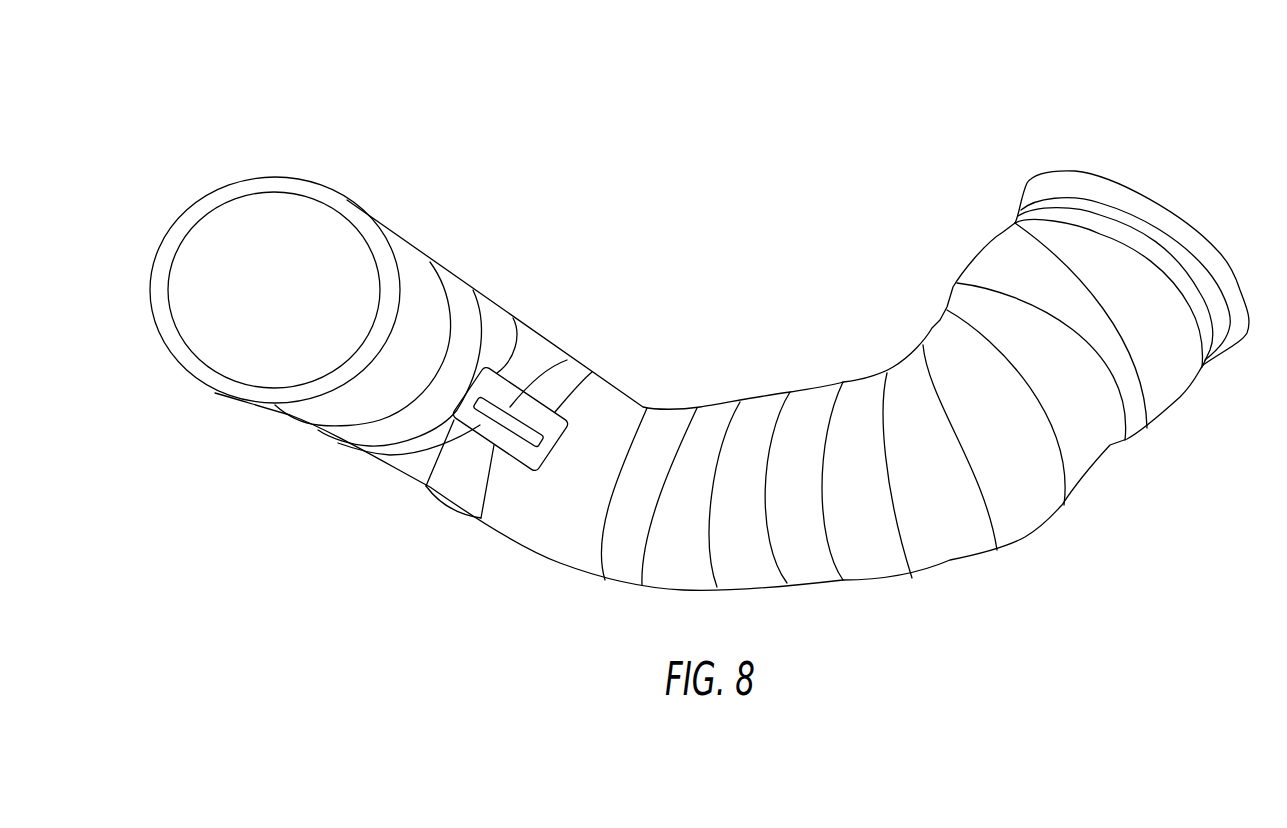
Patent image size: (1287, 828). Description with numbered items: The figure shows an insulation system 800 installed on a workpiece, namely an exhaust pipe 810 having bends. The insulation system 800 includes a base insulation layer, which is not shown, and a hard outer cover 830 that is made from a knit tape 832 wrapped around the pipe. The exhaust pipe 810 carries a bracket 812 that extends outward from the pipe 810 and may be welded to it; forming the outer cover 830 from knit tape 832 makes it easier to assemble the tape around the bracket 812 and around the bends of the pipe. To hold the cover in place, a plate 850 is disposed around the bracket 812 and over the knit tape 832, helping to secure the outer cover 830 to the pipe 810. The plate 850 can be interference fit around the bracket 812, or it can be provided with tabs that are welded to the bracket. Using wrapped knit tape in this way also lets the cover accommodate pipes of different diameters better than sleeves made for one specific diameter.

The insulation system 800 is at (950, 83).
The exhaust pipe 810 is at (270, 183).
The bracket 812 is at (567, 360).
The outer cover 830 is at (677, 408).
The knit tape 832 is at (700, 408).
The plate 850 is at (435, 495).